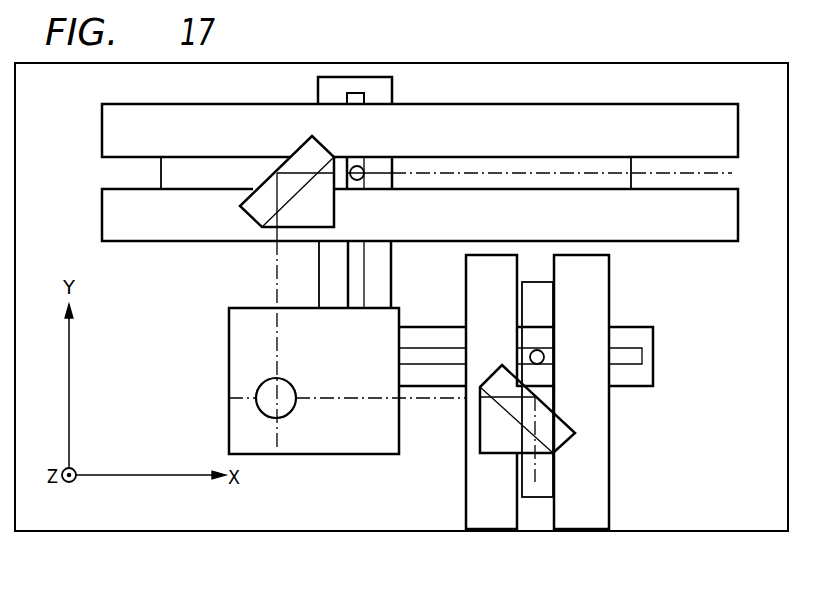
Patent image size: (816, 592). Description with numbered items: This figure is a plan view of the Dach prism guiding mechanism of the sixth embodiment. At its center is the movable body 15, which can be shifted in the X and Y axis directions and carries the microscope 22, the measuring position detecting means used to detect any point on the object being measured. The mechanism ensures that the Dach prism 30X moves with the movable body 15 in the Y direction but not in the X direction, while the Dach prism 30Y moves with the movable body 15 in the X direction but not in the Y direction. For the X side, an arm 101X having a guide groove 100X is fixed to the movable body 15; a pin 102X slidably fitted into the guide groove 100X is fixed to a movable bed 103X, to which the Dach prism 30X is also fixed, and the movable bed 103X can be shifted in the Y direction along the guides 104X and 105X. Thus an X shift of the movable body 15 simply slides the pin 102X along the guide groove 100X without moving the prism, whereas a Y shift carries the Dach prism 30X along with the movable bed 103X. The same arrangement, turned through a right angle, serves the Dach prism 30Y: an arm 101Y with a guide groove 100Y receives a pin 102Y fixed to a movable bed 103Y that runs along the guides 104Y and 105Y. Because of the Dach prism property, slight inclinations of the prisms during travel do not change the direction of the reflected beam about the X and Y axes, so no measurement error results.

The movable body 15 is at (229, 327).
The microscope 22 is at (293, 380).
The Dach prism 30Y is at (334, 210).
The Dach prism 30X is at (573, 442).
The guide groove 100Y is at (350, 289).
The guide groove 100X is at (436, 356).
The arm 101Y is at (319, 255).
The arm 101X is at (658, 352).
The pin 102Y is at (358, 164).
The pin 102X is at (540, 351).
The movable bed 103Y is at (161, 172).
The movable bed 103X is at (532, 302).
The guide 104Y is at (680, 108).
The guide 104X is at (466, 485).
The guide 105Y is at (728, 222).
The guide 105X is at (609, 513).